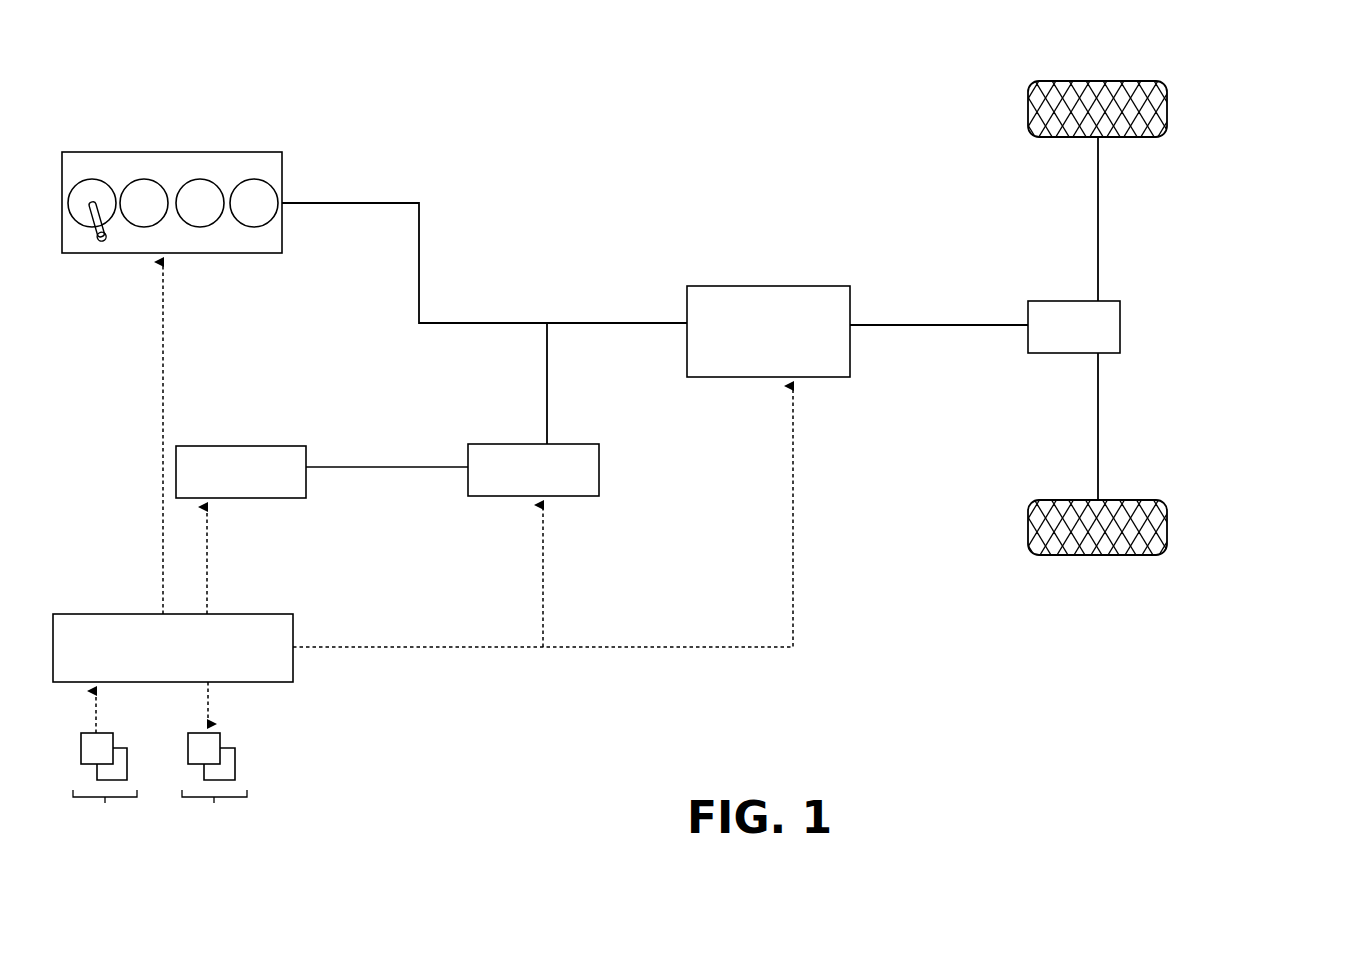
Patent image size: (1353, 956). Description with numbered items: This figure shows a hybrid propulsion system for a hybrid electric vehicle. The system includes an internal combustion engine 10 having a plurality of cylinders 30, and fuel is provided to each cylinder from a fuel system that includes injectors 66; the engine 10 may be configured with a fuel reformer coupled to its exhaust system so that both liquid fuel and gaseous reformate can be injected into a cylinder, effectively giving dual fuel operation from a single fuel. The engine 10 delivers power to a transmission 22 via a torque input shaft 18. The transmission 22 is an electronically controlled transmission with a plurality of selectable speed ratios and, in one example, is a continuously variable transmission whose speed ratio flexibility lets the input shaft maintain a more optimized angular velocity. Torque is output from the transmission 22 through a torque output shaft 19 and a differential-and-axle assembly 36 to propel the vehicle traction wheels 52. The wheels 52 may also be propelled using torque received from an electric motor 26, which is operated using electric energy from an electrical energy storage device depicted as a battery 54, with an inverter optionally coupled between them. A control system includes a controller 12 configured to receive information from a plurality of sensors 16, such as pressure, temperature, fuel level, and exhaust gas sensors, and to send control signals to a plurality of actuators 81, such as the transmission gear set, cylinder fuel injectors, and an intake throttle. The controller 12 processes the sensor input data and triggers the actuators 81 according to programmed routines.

The internal combustion engine 10 is at (1292, 90).
The cylinders 30 is at (88, 180).
The injectors 66 is at (97, 240).
The torque input shaft 18 is at (343, 202).
The transmission 22 is at (768, 331).
The torque output shaft 19 is at (942, 325).
The differential-and-axle assembly 36 is at (1074, 327).
The vehicle traction wheels 52 is at (1082, 81).
The battery 54 is at (322, 472).
The electric motor 26 is at (533, 409).
The controller 12 is at (423, 472).
The sensors 16 is at (99, 768).
The actuators 81 is at (213, 764).